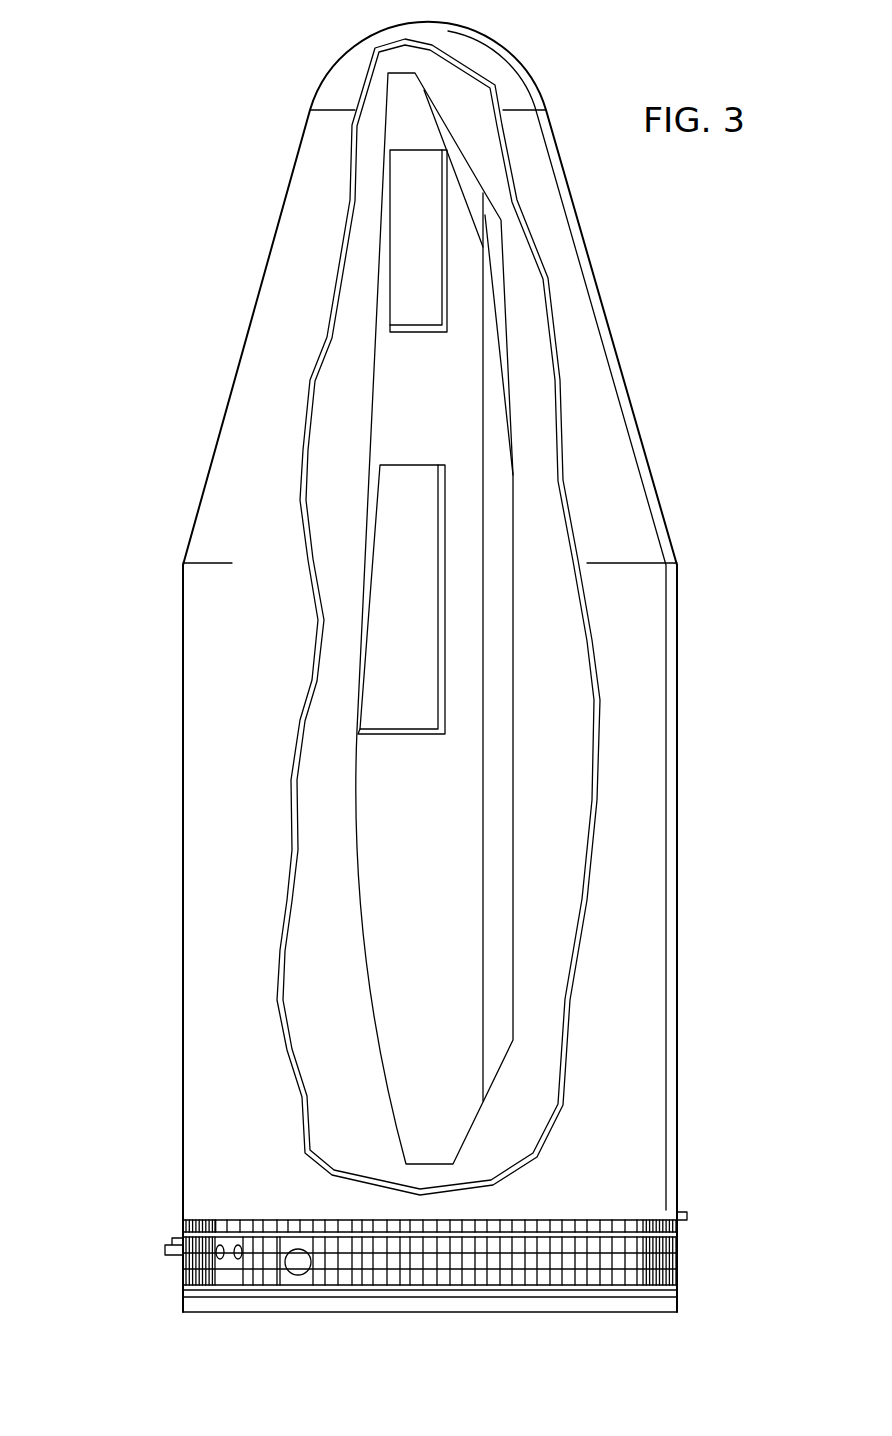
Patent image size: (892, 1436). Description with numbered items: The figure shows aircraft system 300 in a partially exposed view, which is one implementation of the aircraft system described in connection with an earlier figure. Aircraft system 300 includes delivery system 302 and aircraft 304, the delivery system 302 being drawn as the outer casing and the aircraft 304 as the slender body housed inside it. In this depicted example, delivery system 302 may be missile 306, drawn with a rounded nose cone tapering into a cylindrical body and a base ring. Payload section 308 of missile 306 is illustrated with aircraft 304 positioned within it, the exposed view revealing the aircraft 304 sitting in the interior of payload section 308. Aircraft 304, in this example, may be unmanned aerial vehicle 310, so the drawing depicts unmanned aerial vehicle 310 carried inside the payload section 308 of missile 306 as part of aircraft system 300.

The aircraft system 300 is at (237, 150).
The delivery system 302 is at (680, 940).
The aircraft 304 is at (437, 410).
The missile 306 is at (267, 305).
The payload section 308 is at (183, 745).
The unmanned aerial vehicle 310 is at (467, 467).